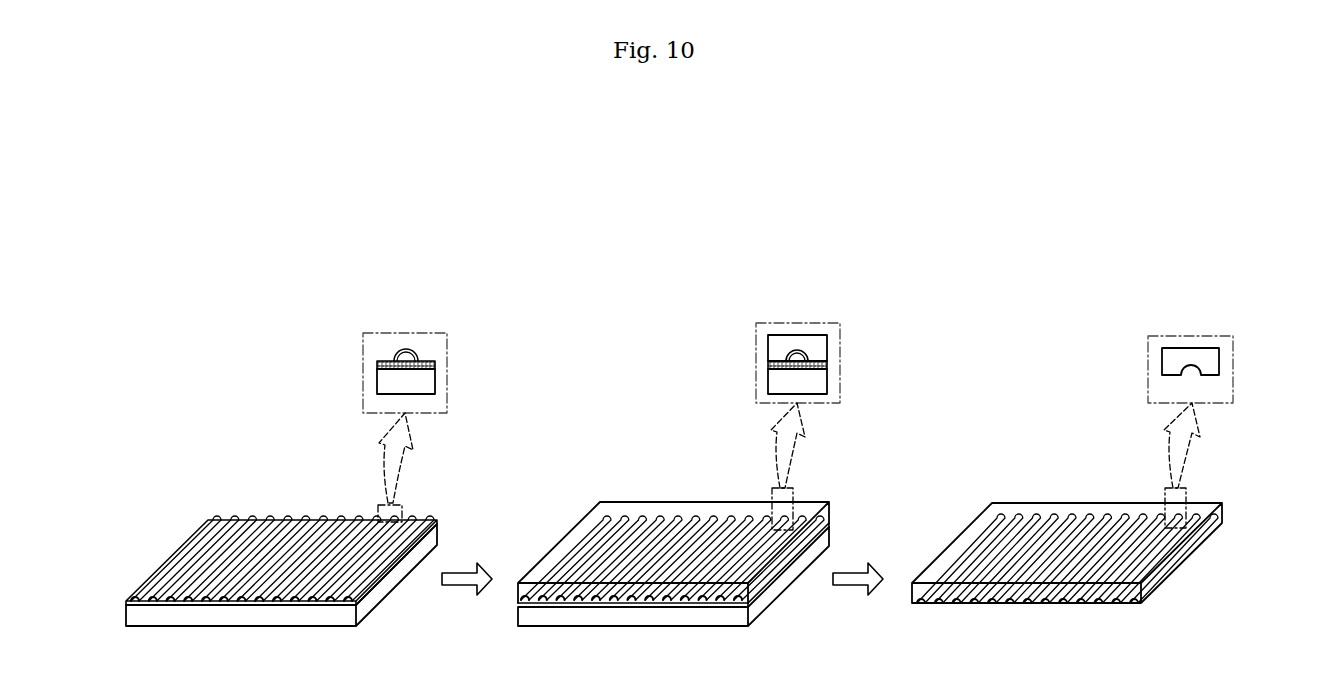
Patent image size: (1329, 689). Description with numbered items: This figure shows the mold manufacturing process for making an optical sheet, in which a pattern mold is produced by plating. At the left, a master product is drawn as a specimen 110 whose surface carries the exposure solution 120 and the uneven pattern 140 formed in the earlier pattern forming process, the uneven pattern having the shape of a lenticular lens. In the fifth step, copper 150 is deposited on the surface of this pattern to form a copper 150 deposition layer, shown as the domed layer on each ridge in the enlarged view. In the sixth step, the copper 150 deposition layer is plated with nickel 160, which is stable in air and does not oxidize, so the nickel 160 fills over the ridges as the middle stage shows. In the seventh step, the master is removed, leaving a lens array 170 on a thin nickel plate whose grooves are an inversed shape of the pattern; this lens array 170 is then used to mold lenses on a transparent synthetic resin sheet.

The specimen 110 is at (367, 604).
The exposure solution 120 is at (432, 519).
The uneven pattern 140 is at (414, 357).
The copper 150 is at (266, 518).
The nickel 160 is at (628, 505).
The lens array 170 is at (1170, 566).